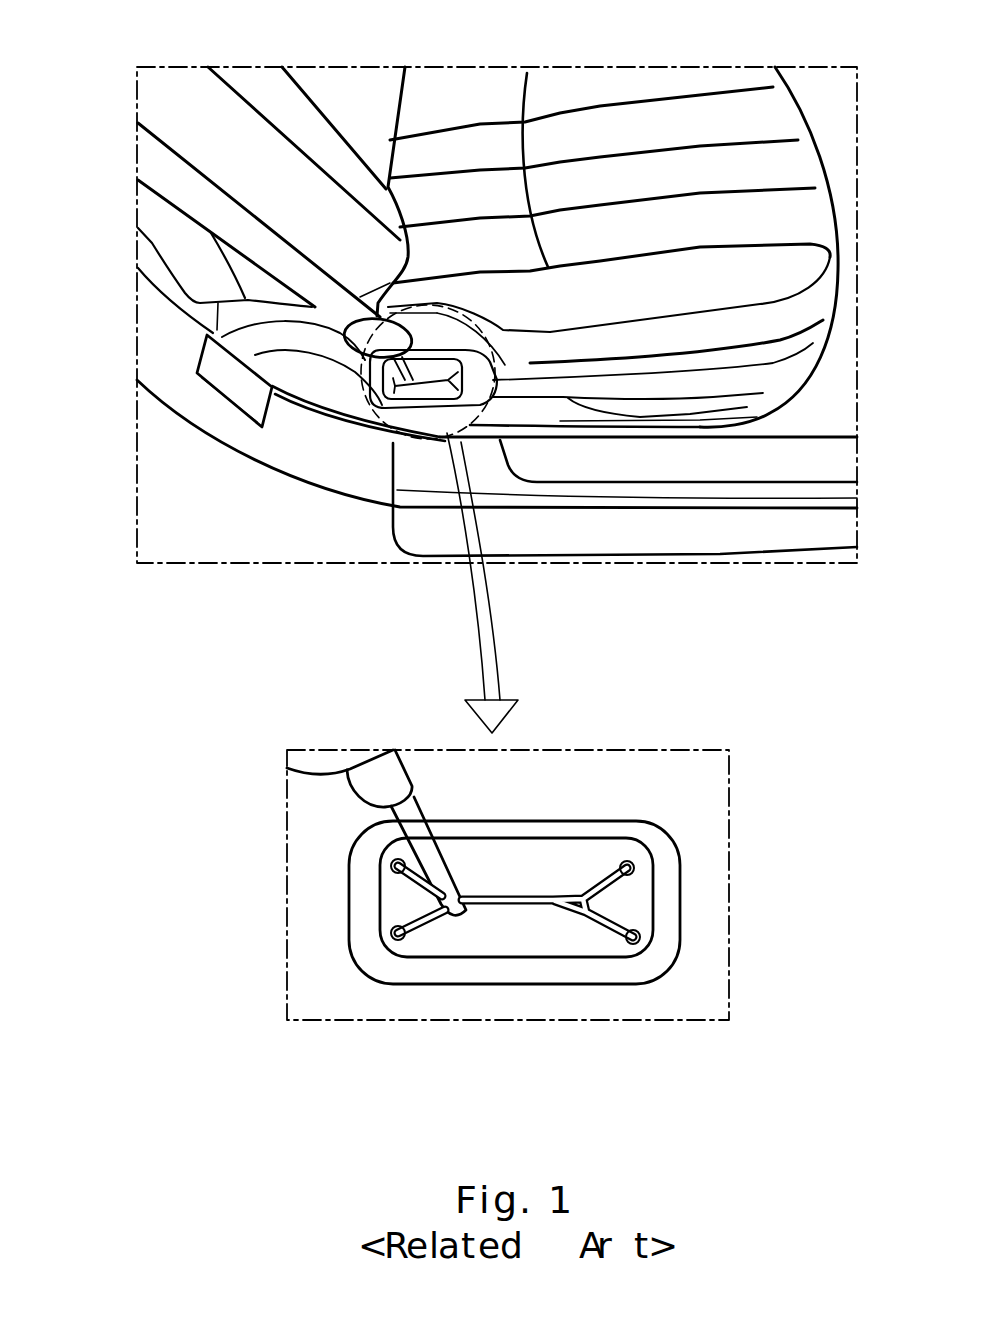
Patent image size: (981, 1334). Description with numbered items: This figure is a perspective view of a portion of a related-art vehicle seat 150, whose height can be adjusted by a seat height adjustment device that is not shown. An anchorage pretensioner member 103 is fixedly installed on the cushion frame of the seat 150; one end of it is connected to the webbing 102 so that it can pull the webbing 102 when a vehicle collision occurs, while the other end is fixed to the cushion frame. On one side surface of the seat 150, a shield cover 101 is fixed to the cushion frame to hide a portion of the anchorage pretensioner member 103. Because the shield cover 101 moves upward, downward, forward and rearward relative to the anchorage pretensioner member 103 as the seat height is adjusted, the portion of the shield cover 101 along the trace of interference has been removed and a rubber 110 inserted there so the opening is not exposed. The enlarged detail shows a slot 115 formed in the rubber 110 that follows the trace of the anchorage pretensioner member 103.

The seat 150 is at (433, 85).
The webbing 102 is at (160, 173).
The shield cover 101 is at (310, 370).
The anchorage pretensioner member 103 is at (360, 337).
The rubber 110 is at (607, 850).
The slot 115 is at (575, 903).